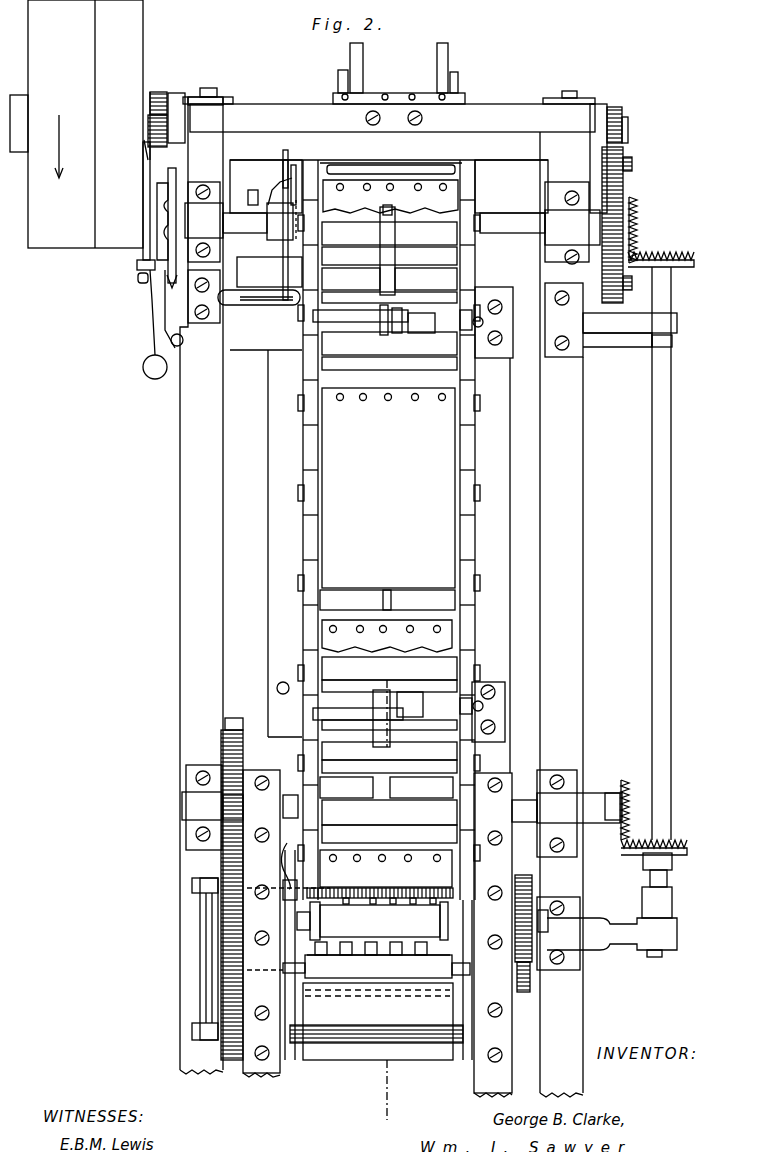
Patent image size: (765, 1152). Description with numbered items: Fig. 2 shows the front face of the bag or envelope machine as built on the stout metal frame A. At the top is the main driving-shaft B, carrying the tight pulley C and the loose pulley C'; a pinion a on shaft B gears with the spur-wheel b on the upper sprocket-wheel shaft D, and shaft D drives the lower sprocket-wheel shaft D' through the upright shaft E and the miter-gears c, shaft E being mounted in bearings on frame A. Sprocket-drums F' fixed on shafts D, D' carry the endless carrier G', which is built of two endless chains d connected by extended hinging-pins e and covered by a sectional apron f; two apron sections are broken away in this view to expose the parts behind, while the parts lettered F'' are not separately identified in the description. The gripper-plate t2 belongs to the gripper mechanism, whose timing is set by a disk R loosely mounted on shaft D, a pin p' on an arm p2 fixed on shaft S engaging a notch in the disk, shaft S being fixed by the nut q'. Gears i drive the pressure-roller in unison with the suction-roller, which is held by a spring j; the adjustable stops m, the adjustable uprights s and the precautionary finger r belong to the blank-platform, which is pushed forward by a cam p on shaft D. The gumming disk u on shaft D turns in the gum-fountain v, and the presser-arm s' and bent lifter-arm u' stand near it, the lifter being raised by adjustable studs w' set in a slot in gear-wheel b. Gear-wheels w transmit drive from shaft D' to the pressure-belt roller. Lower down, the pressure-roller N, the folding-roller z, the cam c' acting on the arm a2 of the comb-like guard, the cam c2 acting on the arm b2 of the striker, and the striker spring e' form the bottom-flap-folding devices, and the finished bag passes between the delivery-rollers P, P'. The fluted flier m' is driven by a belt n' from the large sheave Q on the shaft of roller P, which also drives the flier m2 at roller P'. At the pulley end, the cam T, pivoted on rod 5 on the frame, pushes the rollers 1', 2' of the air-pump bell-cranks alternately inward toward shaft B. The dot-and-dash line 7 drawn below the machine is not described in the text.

The frame A is at (428, 597).
The loose pulley C' is at (76, 124).
The tight pulley C is at (132, 212).
The cam T is at (146, 212).
The main driving-shaft B is at (176, 118).
The gears i is at (158, 94).
The roller 1' is at (138, 120).
The roller 2' is at (136, 150).
The cam p is at (171, 239).
The rod 5 is at (163, 324).
The upper sprocket-wheel shaft D is at (392, 224).
The lower sprocket-wheel shaft D' is at (402, 807).
The gum-roller u is at (272, 225).
The lifter-arm u' is at (270, 186).
The presser-arm s' is at (294, 172).
The gum-fountain v is at (260, 281).
The sprocket-drums F' is at (393, 530).
The bars F'' is at (388, 533).
The hinging-pins e is at (389, 504).
The apron f is at (389, 533).
The gripper-plate t2 is at (381, 202).
The pin p' is at (401, 251).
The arm p2 is at (380, 253).
The disk R is at (389, 511).
The shaft S is at (407, 511).
The endless carrier G' is at (387, 499).
The Vaucauson chains d is at (478, 186).
The spring j is at (389, 110).
The adjustable uprights s is at (348, 66).
The side and back stops m is at (456, 67).
The plate or finger r is at (399, 90).
The pinion a is at (615, 106).
The spur-wheel b is at (628, 193).
The adjustable studs w' is at (642, 160).
The gear-wheels w is at (638, 291).
The miter-gears c is at (660, 526).
The upright shaft E is at (676, 588).
The nut q' is at (496, 514).
The center line 7 is at (385, 901).
The sheave Q is at (200, 946).
The belt n' is at (195, 993).
The spring e' is at (276, 866).
The cam c' is at (288, 902).
The arm a2 is at (276, 962).
The arm b2 is at (470, 965).
The cam c2 is at (507, 933).
The flier m' is at (380, 887).
The pressure-roller N is at (372, 921).
The folding-roller z is at (378, 960).
The delivery-roller P is at (378, 968).
The lower delivery-roller P' is at (378, 1021).
The flier m2 is at (376, 1025).